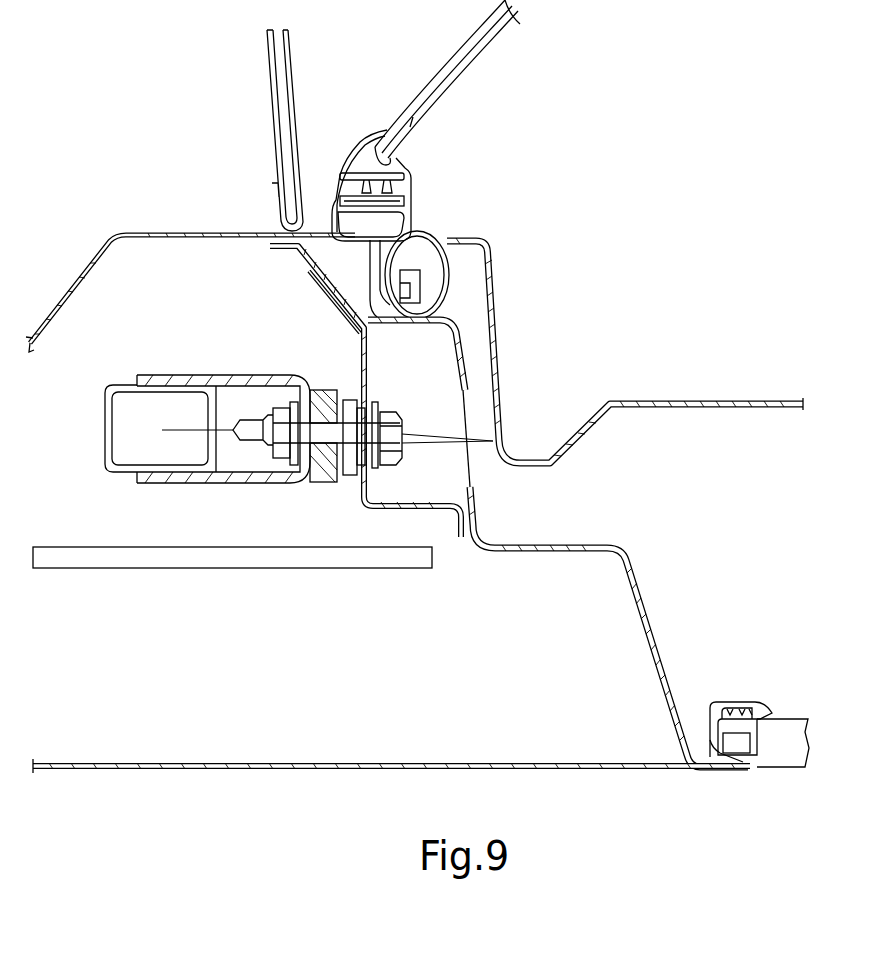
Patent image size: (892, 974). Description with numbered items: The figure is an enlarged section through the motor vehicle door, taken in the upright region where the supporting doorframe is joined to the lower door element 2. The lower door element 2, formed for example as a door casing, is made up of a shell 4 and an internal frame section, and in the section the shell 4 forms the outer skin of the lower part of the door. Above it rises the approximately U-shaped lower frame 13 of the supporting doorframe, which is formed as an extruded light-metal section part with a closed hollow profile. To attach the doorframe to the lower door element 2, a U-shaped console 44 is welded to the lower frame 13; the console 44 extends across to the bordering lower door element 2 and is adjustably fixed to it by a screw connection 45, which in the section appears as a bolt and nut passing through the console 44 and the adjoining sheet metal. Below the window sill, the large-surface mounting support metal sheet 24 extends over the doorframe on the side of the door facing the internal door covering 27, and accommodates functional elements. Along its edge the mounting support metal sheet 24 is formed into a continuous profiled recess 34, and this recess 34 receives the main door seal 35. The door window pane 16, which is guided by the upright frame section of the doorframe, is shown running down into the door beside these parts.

The lower door element 2 is at (628, 783).
The shell 4 is at (228, 772).
The lower frame 13 is at (105, 430).
The door window pane 16 is at (170, 578).
The mounting support metal sheet 24 is at (83, 257).
The internal door covering 27 is at (264, 70).
The profiled recess 34 is at (418, 277).
The main door seal 35 is at (451, 229).
The console 44 is at (243, 375).
The screw connection 45 is at (409, 414).